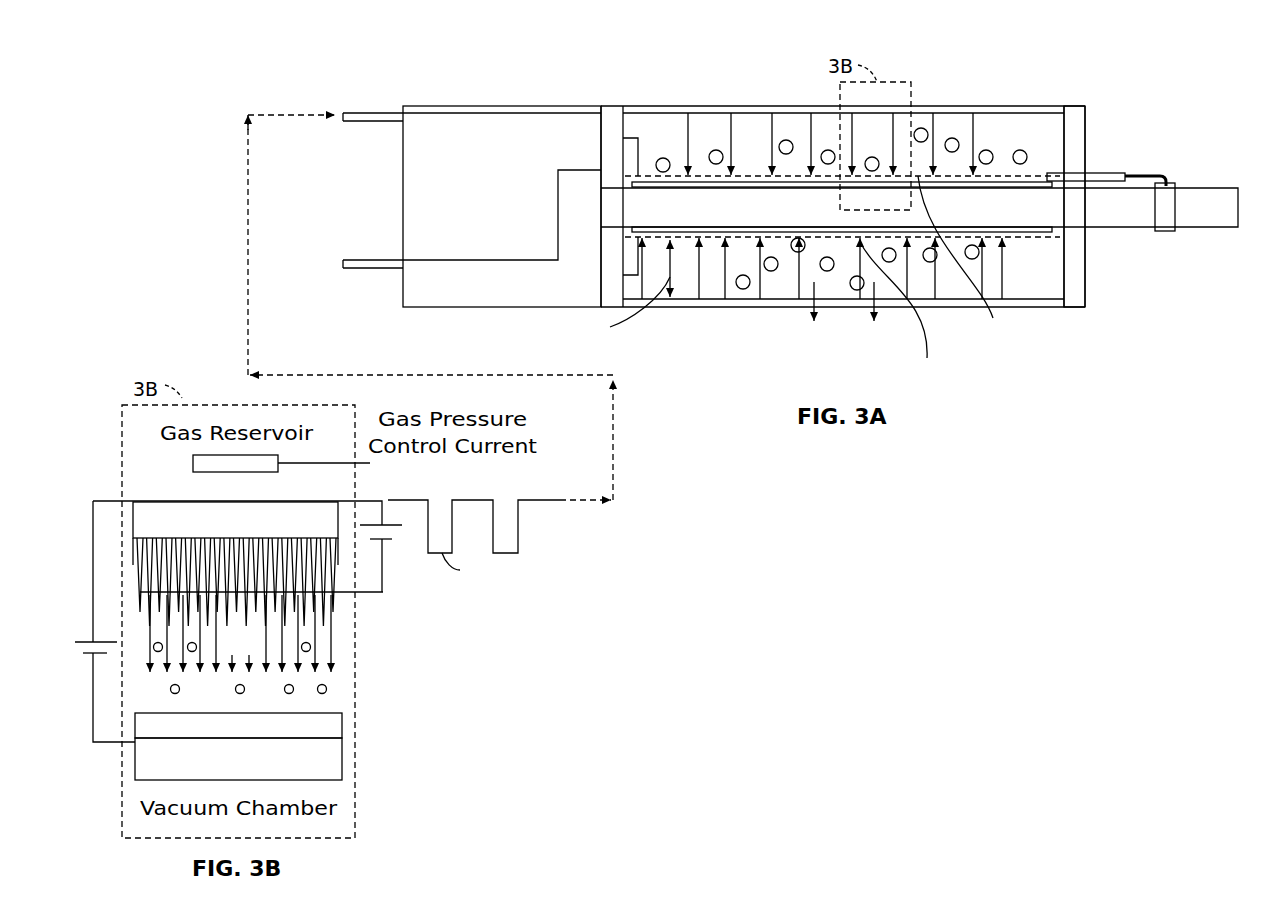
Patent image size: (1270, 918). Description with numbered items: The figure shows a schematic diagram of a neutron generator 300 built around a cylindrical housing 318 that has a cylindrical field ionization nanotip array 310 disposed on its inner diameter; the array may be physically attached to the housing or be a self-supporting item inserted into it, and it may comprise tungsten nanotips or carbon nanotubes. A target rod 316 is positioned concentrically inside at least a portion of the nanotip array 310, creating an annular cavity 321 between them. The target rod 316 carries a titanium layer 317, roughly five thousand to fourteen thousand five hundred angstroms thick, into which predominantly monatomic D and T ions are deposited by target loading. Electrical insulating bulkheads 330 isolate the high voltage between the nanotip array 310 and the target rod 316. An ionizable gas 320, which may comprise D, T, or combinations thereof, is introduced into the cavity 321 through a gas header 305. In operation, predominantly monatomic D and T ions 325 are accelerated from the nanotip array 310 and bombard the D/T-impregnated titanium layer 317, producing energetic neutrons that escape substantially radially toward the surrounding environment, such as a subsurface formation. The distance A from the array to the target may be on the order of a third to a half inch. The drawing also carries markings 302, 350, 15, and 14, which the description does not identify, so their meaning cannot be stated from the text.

In FIG. 3A, the neutron generator 300 is at (404, 74).
In FIG. 3A, the chamber housing 302 is at (1063, 108).
In FIG. 3A, the gas header 305 is at (597, 290).
In FIG. 3A, the field ionization nanotip array 310 is at (608, 133).
In FIG. 3B, the field ionization nanotip array 310 is at (323, 617).
In FIG. 3A, the target rod 316 is at (1100, 228).
In FIG. 3B, the target rod 316 is at (327, 758).
In FIG. 3A, the titanium layer 317 is at (1013, 190).
In FIG. 3B, the titanium layer 317 is at (340, 727).
In FIG. 3A, the cylindrical housing 318 is at (628, 118).
In FIG. 3A, the ionizable gas 320 is at (1023, 132).
In FIG. 3A, the annular cavity 321 is at (1055, 278).
In FIG. 3A, the D and T ions 325 is at (716, 150).
In FIG. 3A, the electrical insulating bulkheads 330 is at (618, 133).
In FIG. 3B, the ionization pulse waveform 350 is at (476, 500).
In FIG. 3A, the suppressor electrode 15 is at (1040, 164).
In FIG. 3B, the voltage source 14 is at (96, 621).